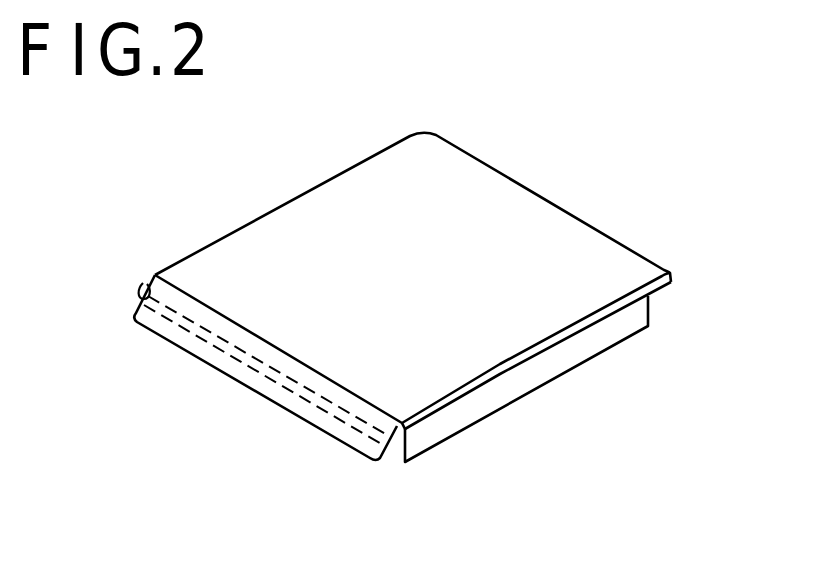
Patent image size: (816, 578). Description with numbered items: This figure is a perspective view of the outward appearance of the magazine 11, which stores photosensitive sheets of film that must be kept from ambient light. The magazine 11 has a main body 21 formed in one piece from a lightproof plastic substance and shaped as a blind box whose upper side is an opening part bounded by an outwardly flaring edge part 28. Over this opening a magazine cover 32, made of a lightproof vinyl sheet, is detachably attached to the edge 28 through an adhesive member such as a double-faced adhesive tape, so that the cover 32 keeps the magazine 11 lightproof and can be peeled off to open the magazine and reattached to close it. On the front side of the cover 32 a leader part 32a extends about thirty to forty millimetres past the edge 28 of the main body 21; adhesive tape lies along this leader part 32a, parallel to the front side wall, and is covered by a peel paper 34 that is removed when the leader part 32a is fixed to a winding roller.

The magazine 11 is at (193, 162).
The main body part of the magazine 21 is at (512, 407).
The outwardly flaring edge part 28 is at (570, 340).
The magazine cover 32 is at (517, 202).
The leader part 32a is at (252, 393).
The peel paper 34 is at (143, 283).